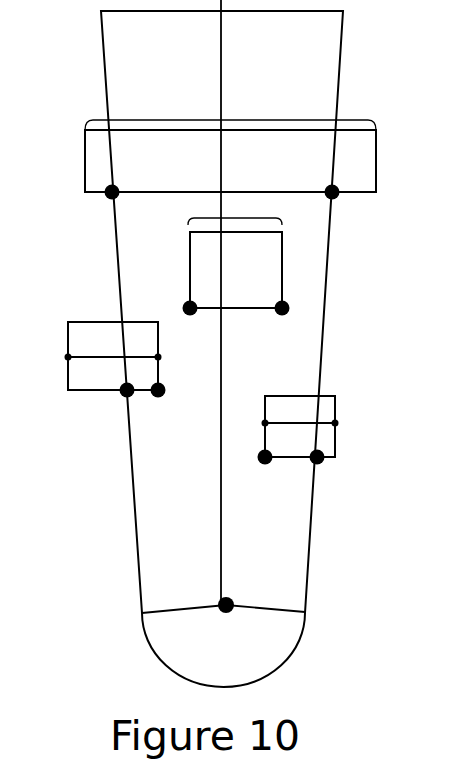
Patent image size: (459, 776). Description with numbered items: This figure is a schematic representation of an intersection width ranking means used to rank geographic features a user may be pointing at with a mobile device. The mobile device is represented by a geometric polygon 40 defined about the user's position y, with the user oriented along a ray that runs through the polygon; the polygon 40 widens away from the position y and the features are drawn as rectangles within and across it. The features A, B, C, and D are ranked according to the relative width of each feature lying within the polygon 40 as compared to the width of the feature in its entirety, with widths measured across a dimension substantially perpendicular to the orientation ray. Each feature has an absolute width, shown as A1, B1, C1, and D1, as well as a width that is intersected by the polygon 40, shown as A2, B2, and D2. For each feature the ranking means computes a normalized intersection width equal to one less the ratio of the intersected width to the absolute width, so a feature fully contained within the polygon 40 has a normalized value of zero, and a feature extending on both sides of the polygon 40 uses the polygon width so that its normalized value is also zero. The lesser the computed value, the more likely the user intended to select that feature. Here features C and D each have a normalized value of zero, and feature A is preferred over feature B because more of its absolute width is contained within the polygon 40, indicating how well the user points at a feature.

The geometric polygon 40 is at (308, 600).
The position y is at (232, 610).
The feature D is at (230, 161).
The absolute width D1 is at (150, 193).
The intersected width D2 is at (165, 120).
The feature C is at (236, 270).
The absolute width C1 is at (247, 215).
The feature B is at (113, 356).
The absolute width B1 is at (140, 395).
The intersected width B2 is at (82, 356).
The feature A is at (300, 426).
The absolute width A1 is at (303, 459).
The intersected width A2 is at (325, 420).